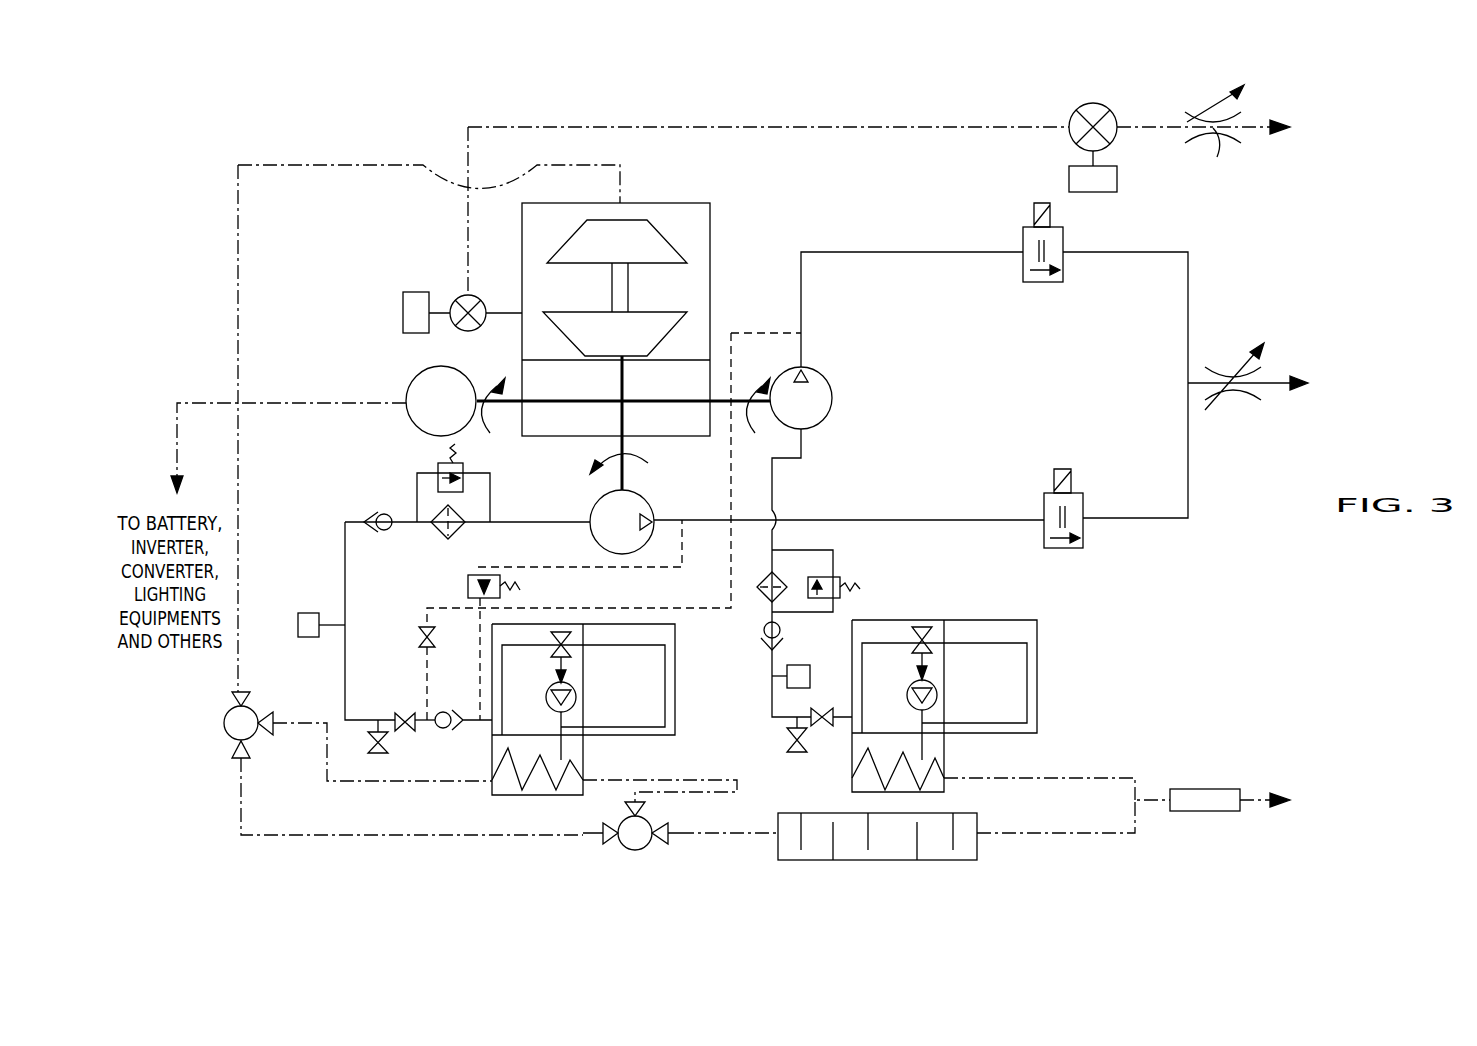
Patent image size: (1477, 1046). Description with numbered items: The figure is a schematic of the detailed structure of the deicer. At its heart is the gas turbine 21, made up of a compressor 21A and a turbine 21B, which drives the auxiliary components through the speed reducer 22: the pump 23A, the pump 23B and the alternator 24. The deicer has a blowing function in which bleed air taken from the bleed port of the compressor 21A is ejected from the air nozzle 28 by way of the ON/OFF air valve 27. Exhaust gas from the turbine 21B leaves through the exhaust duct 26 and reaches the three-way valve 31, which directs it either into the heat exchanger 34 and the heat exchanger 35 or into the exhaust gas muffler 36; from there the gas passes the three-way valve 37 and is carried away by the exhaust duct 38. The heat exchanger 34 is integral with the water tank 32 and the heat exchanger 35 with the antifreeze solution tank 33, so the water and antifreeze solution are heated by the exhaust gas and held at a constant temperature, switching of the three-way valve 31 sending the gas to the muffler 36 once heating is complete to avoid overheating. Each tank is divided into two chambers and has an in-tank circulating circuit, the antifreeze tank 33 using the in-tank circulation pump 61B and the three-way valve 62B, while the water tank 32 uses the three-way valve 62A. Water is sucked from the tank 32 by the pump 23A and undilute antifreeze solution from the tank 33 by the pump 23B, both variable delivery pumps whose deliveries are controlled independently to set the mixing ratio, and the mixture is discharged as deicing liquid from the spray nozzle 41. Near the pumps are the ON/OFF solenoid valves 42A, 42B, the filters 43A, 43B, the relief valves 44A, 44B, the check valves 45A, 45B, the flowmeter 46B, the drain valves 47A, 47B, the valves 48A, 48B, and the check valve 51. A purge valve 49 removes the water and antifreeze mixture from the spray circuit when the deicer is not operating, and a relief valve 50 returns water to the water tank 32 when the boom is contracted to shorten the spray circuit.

The gas turbine 21 is at (557, 279).
The compressor 21A is at (485, 300).
The turbine 21B is at (556, 258).
The speed reducer 22 is at (649, 394).
The pump 23A is at (650, 498).
The pump 23B is at (832, 398).
The alternator 24 is at (408, 386).
The exhaust duct 26 is at (660, 203).
The ON/OFF air valve 27 is at (1093, 103).
The air nozzle 28 is at (1214, 134).
The three-way valve 31 is at (223, 722).
The water tank 32 is at (675, 687).
The antifreeze solution tank 33 is at (943, 620).
The heat exchanger 34 is at (523, 795).
The heat exchanger 35 is at (945, 757).
The exhaust gas muffler 36 is at (978, 852).
The three-way valve 37 is at (577, 688).
The exhaust duct 38 is at (1208, 789).
The spray nozzle 41 is at (1243, 395).
The ON/OFF solenoid valve 42A is at (1067, 548).
The ON/OFF solenoid valve 42B is at (1045, 282).
The filter 43A is at (456, 538).
The filter 43B is at (765, 570).
The relief valve 44A is at (466, 465).
The relief valve 44B is at (841, 575).
The check valve 45A is at (364, 518).
The check valve 45B is at (763, 632).
The flowmeter 46B is at (803, 665).
The drain valve 47A is at (388, 748).
The drain valve 47B is at (790, 742).
The valve 48A is at (403, 714).
The valve 48B is at (827, 708).
The purge valve 49 is at (308, 613).
The relief valve 50 is at (468, 586).
The check valve 51 is at (445, 712).
The in-tank circulation pump 61B is at (909, 698).
The three-way valve 62A is at (552, 645).
The three-way valve 62B is at (911, 643).